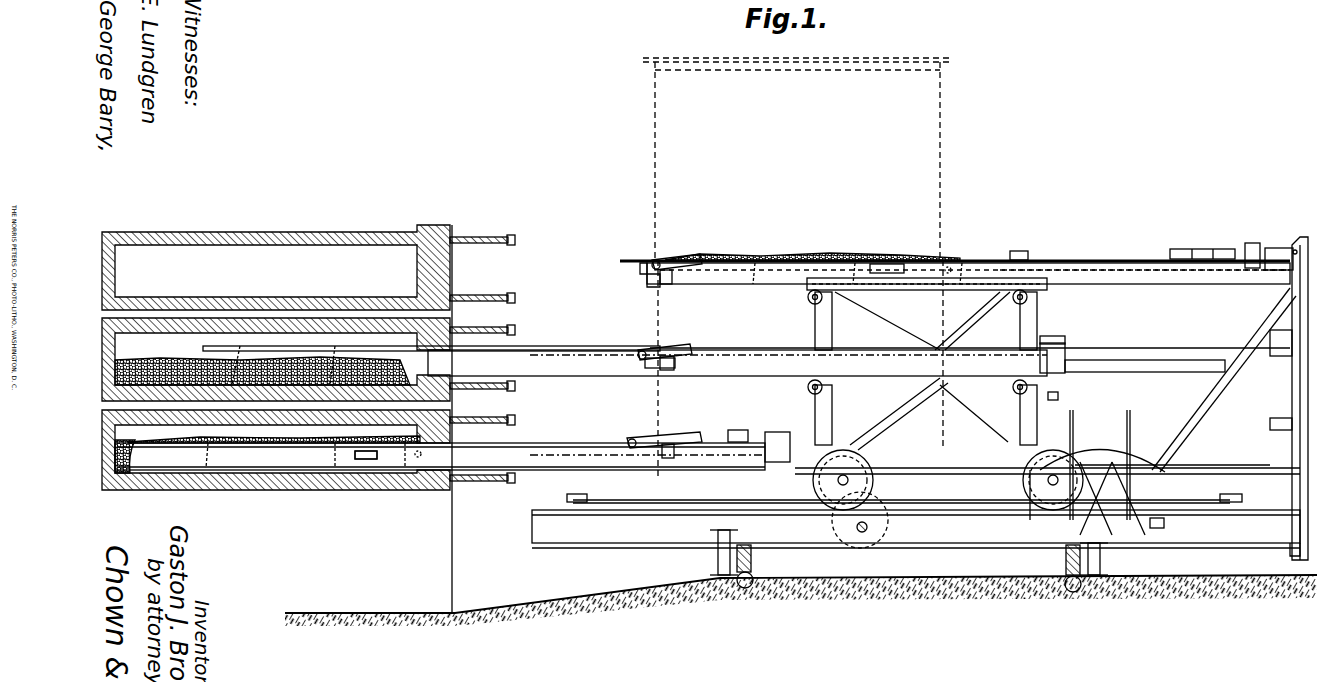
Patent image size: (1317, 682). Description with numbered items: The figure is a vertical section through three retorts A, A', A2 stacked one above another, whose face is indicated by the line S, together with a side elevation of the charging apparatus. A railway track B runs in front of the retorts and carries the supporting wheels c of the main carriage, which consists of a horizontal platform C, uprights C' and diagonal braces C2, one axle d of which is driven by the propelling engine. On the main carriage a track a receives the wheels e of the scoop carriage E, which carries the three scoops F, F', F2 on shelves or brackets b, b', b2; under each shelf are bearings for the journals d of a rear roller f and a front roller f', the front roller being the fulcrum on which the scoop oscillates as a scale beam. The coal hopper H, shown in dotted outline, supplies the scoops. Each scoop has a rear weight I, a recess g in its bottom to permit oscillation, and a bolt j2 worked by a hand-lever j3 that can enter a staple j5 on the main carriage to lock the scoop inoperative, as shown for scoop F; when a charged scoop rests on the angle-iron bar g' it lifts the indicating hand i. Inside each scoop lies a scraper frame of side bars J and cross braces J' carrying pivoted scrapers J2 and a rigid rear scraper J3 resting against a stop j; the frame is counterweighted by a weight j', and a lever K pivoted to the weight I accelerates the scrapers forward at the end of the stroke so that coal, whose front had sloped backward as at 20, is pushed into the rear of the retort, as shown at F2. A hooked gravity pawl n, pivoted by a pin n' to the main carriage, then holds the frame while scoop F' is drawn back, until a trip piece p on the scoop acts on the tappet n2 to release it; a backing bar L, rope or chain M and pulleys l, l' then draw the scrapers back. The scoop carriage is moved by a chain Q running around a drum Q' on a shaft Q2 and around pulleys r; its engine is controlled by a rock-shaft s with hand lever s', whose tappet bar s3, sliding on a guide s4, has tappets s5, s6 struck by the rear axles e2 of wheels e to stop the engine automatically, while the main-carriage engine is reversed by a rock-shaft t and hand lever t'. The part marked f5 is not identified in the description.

The retort A is at (308, 267).
The retort A' is at (308, 359).
The retort A2 is at (308, 450).
The railway track B is at (907, 583).
The horizontal platform C is at (916, 542).
The uprights C' is at (1297, 398).
The diagonal braces C2 is at (1224, 380).
The scoop carriage E is at (927, 364).
The scoop F is at (955, 268).
The scoop F' is at (737, 363).
The scoop F2 is at (440, 456).
The coal hopper H is at (798, 159).
The permanent weight I is at (1150, 301).
The angle-iron side bars J is at (746, 334).
The cross braces J' is at (1202, 246).
The pivoted scrapers J2 is at (524, 348).
The rigid rear scraper J3 is at (680, 350).
The lever K is at (977, 342).
The backing bar L is at (995, 406).
The wire rope or chain M is at (869, 383).
The chain or wire rope Q is at (901, 494).
The drum Q' is at (860, 524).
The horizontal shaft Q2 is at (851, 526).
The face line of stack S is at (455, 419).
The track a is at (928, 513).
The shelf or bracket b is at (887, 321).
The shelf or bracket b' is at (899, 414).
The shelf or bracket b2 is at (968, 422).
The supporting wheels c is at (1052, 562).
The journals d is at (1044, 431).
The supporting wheels e is at (948, 468).
The axles of rear wheels e2 is at (1102, 480).
The rear roller f is at (1009, 380).
The front roller f' is at (799, 344).
The roller f5 is at (1263, 416).
The recess g is at (1001, 382).
The angle-iron bar g' is at (1291, 340).
The indicating hand i is at (1276, 330).
The stop j is at (680, 364).
The weight j' is at (949, 332).
The sliding bolt j2 is at (900, 379).
The hand-lever j3 is at (941, 377).
The staple j5 is at (1263, 366).
The pulley l is at (914, 360).
The pulley l' is at (1008, 355).
The hooked gravity pawl n is at (664, 342).
The pivot pin n' is at (627, 326).
The angular tappet piece n2 is at (674, 366).
The trip piece p is at (607, 363).
The pulleys r is at (900, 492).
The rock-shaft s is at (1038, 504).
The hand lever s' is at (1081, 461).
The horizontal tappet bar s3 is at (1172, 466).
The guide s4 is at (786, 488).
The front tappet s5 is at (744, 488).
The rear tappet s6 is at (1256, 484).
The rock-shaft t is at (1157, 524).
The hand lever t' is at (946, 404).
The sloping front portion of coal charge 20 is at (639, 274).